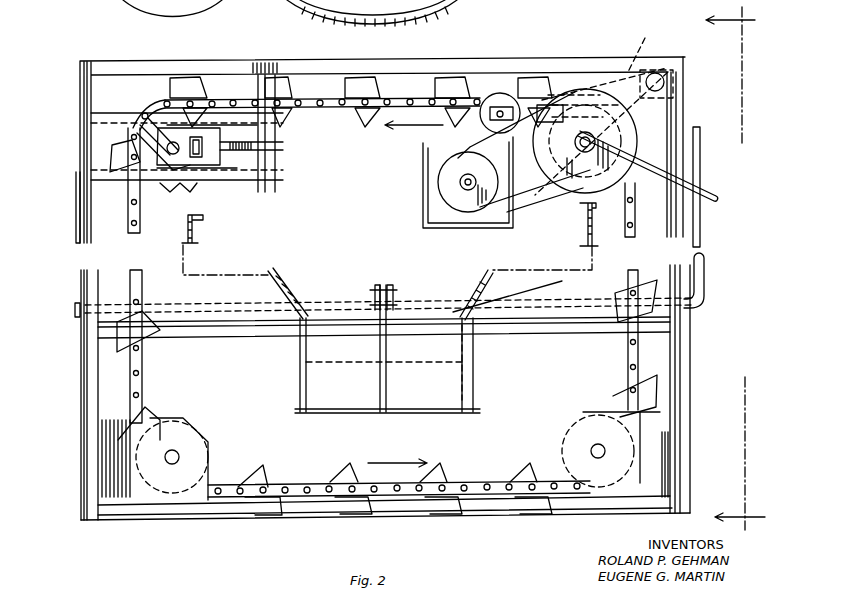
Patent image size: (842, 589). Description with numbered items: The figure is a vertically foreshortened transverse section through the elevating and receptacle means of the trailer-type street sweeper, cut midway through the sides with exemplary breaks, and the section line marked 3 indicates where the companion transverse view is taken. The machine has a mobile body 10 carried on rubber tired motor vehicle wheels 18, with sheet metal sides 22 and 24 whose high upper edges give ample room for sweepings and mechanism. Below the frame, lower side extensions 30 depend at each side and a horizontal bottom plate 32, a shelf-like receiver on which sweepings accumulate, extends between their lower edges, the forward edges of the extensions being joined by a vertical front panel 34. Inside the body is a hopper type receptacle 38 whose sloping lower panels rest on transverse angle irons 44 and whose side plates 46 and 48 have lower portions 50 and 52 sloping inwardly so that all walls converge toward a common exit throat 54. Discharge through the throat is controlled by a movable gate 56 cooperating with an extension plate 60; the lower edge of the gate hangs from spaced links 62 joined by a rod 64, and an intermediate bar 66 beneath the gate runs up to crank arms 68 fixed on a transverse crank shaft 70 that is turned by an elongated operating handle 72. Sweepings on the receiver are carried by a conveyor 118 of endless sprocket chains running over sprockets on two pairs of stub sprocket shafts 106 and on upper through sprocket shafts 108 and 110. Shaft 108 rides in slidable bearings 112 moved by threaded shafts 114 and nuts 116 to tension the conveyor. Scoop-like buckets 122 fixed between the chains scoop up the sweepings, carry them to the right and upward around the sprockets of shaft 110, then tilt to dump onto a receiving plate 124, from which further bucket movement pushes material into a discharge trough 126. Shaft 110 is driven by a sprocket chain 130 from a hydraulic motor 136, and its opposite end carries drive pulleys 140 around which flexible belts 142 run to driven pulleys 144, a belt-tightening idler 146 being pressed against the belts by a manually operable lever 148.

The mobile body 10 is at (74, 455).
The motor vehicle wheels 18 is at (118, 3).
The side 22 is at (76, 222).
The side 24 is at (690, 240).
The lower side extensions 30 is at (273, 3).
The bottom plate 32 is at (228, 521).
The vertical front panel 34 is at (204, 393).
The hopper type receptacle 38 is at (344, 245).
The angle irons 44 is at (260, 333).
The side plate 46 is at (200, 232).
The side plate 48 is at (586, 232).
The lower portion of side plate 50 is at (290, 292).
The lower portion of side plate 52 is at (478, 290).
The exit throat 54 is at (542, 318).
The movable gate 56 is at (375, 400).
The extension plate 60 is at (458, 345).
The links 62 is at (298, 380).
The rod 64 is at (448, 414).
The intermediate bar 66 is at (380, 350).
The crank arms 68 is at (376, 285).
The crank shaft 70 is at (167, 303).
The operating handle 72 is at (706, 272).
The stub sprocket shafts 106 is at (178, 450).
The upper through sprocket shaft 108 is at (163, 108).
The upper through sprocket shaft 110 is at (587, 130).
The slidable bearings 112 is at (172, 185).
The threaded shafts 114 is at (283, 147).
The nuts 116 is at (247, 180).
The conveyor 118 is at (333, 109).
The scoop-like buckets 122 is at (288, 84).
The receiving plate 124 is at (557, 95).
The discharge trough 126 is at (422, 175).
The sprocket chain 130 is at (601, 109).
The hydraulic motor 136 is at (663, 74).
The drive pulleys 140 is at (637, 190).
The flexible belts 142 is at (535, 205).
The driven pulleys 144 is at (467, 212).
The belt-tightening idler 146 is at (500, 96).
The manually operable lever 148 is at (720, 190).
The section line 3- 3 is at (740, 268).